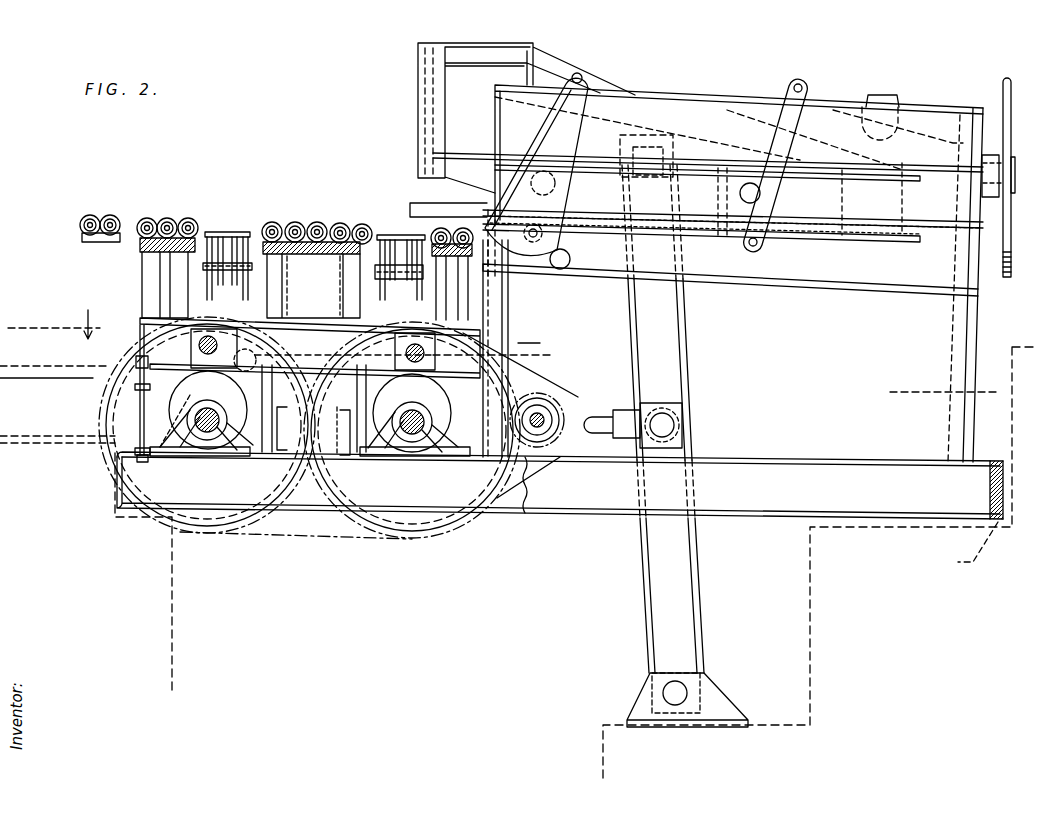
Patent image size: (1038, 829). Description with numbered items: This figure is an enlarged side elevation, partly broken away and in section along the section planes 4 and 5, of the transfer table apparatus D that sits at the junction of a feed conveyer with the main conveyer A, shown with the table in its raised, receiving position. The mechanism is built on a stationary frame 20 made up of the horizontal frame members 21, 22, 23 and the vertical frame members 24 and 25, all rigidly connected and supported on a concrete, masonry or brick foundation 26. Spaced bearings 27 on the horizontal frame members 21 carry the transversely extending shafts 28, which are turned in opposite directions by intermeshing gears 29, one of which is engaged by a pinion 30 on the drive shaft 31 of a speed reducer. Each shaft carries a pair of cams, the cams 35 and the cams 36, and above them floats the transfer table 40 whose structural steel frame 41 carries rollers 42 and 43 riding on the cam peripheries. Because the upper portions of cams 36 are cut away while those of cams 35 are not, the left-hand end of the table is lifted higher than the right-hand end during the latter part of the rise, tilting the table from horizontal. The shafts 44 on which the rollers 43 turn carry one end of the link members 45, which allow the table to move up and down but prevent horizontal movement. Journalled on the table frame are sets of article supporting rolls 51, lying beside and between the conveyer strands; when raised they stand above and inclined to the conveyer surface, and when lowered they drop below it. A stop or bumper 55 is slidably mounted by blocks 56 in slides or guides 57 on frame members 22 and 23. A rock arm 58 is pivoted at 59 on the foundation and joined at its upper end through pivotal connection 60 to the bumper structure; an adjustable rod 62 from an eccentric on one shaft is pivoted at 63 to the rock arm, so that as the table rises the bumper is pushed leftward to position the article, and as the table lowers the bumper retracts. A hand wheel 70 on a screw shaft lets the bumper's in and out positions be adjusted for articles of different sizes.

The section plane of Fig. 4 is at (945, 395).
The section line reference 5 is at (280, 332).
The stationary frame 20 is at (773, 458).
The horizontal frame member 21 is at (746, 505).
The horizontal frame member 22 is at (810, 278).
The horizontal frame member 23 is at (688, 99).
The vertical frame member 24 is at (506, 305).
The vertical frame member 25 is at (957, 322).
The foundation 26 is at (175, 640).
The bearings 27 is at (184, 448).
The shafts 28 is at (212, 428).
The intermeshing gears 29 is at (240, 525).
The pinion 30 is at (558, 404).
The drive shaft 31 is at (541, 426).
The cams 35 is at (178, 398).
The cams 36 is at (412, 413).
The transfer table 40 is at (135, 279).
The structural steel frame 41 is at (295, 322).
The rollers 42 is at (208, 350).
The rollers 43 is at (522, 348).
The shafts 44 is at (413, 345).
The link members 45 is at (310, 358).
The article supporting rolls 51 is at (166, 218).
The bumper 55 is at (418, 93).
The blocks 56 is at (577, 192).
The slides or guides 57 is at (806, 216).
The rock arm 58 is at (672, 350).
The pivot 59 is at (668, 690).
The pivotal connection 60 is at (633, 143).
The adjustable rod 62 is at (600, 418).
The pivotal connection 63 is at (673, 418).
The hand wheel 70 is at (1003, 84).
The main conveyer A is at (232, 230).
The transfer table apparatus D is at (802, 357).